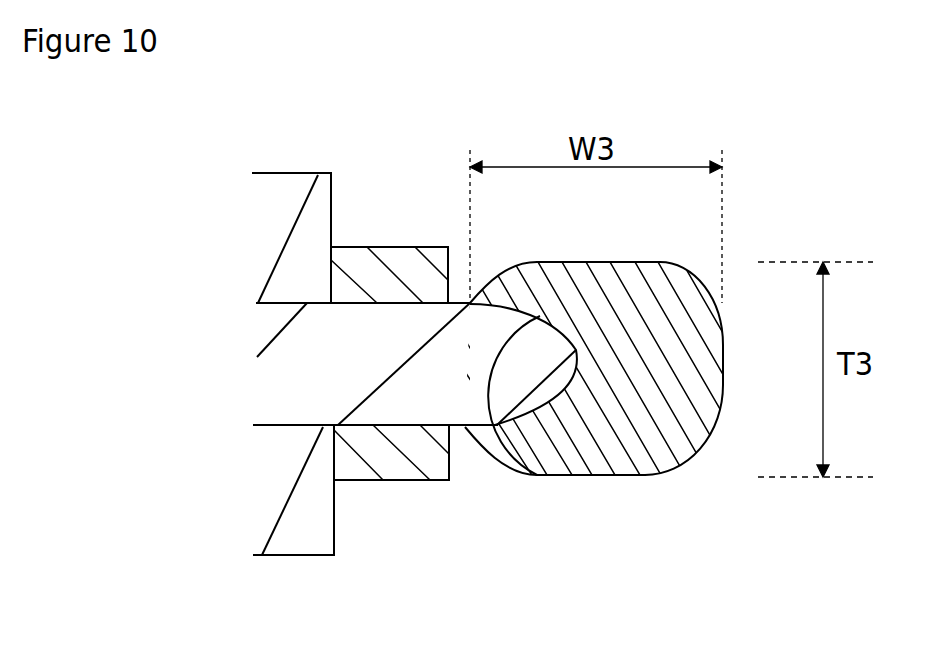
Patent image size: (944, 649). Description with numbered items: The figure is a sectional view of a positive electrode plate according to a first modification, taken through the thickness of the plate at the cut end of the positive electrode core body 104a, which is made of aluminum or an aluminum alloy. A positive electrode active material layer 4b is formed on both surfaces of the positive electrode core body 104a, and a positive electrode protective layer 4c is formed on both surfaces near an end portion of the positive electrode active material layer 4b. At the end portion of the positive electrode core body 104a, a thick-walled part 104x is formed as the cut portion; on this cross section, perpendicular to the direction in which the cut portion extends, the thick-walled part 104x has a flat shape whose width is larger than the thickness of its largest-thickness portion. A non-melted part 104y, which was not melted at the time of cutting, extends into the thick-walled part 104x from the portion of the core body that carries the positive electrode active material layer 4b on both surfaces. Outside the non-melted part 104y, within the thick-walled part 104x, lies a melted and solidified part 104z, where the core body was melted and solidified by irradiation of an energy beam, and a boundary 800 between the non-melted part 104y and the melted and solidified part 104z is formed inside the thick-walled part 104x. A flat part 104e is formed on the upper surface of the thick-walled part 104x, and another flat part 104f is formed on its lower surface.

The positive electrode active material layer 4b is at (273, 203).
The positive electrode protective layer 4c is at (360, 268).
The positive electrode core body 104a is at (417, 387).
The flat part 104e is at (603, 262).
The flat part 104f is at (568, 477).
The thick-walled part 104x is at (683, 466).
The non-melted part (first region) 104y is at (288, 382).
The melted and solidified part (second region) 104z is at (603, 478).
The boundary 800 is at (490, 425).